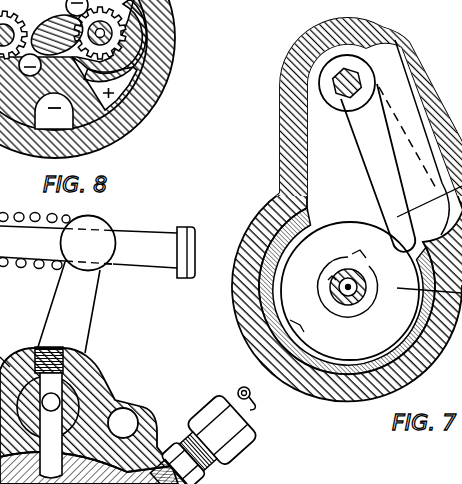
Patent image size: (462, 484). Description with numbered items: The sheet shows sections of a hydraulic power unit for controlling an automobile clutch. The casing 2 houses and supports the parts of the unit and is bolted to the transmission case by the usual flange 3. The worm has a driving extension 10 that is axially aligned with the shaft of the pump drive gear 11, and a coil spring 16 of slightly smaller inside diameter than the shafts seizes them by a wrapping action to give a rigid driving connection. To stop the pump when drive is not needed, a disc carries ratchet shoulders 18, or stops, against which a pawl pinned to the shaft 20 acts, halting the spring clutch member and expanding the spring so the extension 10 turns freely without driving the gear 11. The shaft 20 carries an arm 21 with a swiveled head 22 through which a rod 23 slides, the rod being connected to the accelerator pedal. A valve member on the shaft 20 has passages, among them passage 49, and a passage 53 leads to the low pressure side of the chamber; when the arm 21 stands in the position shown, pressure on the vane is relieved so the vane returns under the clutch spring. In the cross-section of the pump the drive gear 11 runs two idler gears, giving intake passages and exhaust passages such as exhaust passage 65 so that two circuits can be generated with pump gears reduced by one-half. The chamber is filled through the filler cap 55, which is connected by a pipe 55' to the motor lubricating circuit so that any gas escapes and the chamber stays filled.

In FIG. 7, the casing 2 is at (273, 193).
In FIG. 8, the casing 2 is at (163, 41).
In FIG. 8, the flange 3 is at (53, 120).
In FIG. 7, the driving extension 10 is at (346, 270).
In FIG. 8, the drive gear 11 is at (72, 55).
In FIG. 7, the coil spring 16 is at (338, 303).
In FIG. 7, the ratchet shoulders 18 is at (262, 362).
In FIG. 7, the shaft 20 is at (360, 74).
In FIG. 4, the arm 21 is at (50, 328).
In FIG. 4, the head 22 is at (90, 240).
In FIG. 4, the rod 23 is at (135, 253).
In FIG. 4, the passage 49 is at (56, 398).
In FIG. 4, the passage 53 is at (53, 443).
In FIG. 4, the filler cap 55 is at (213, 438).
In FIG. 4, the pipe 55' is at (278, 418).
In FIG. 8, the exhaust passage 65 is at (122, 85).